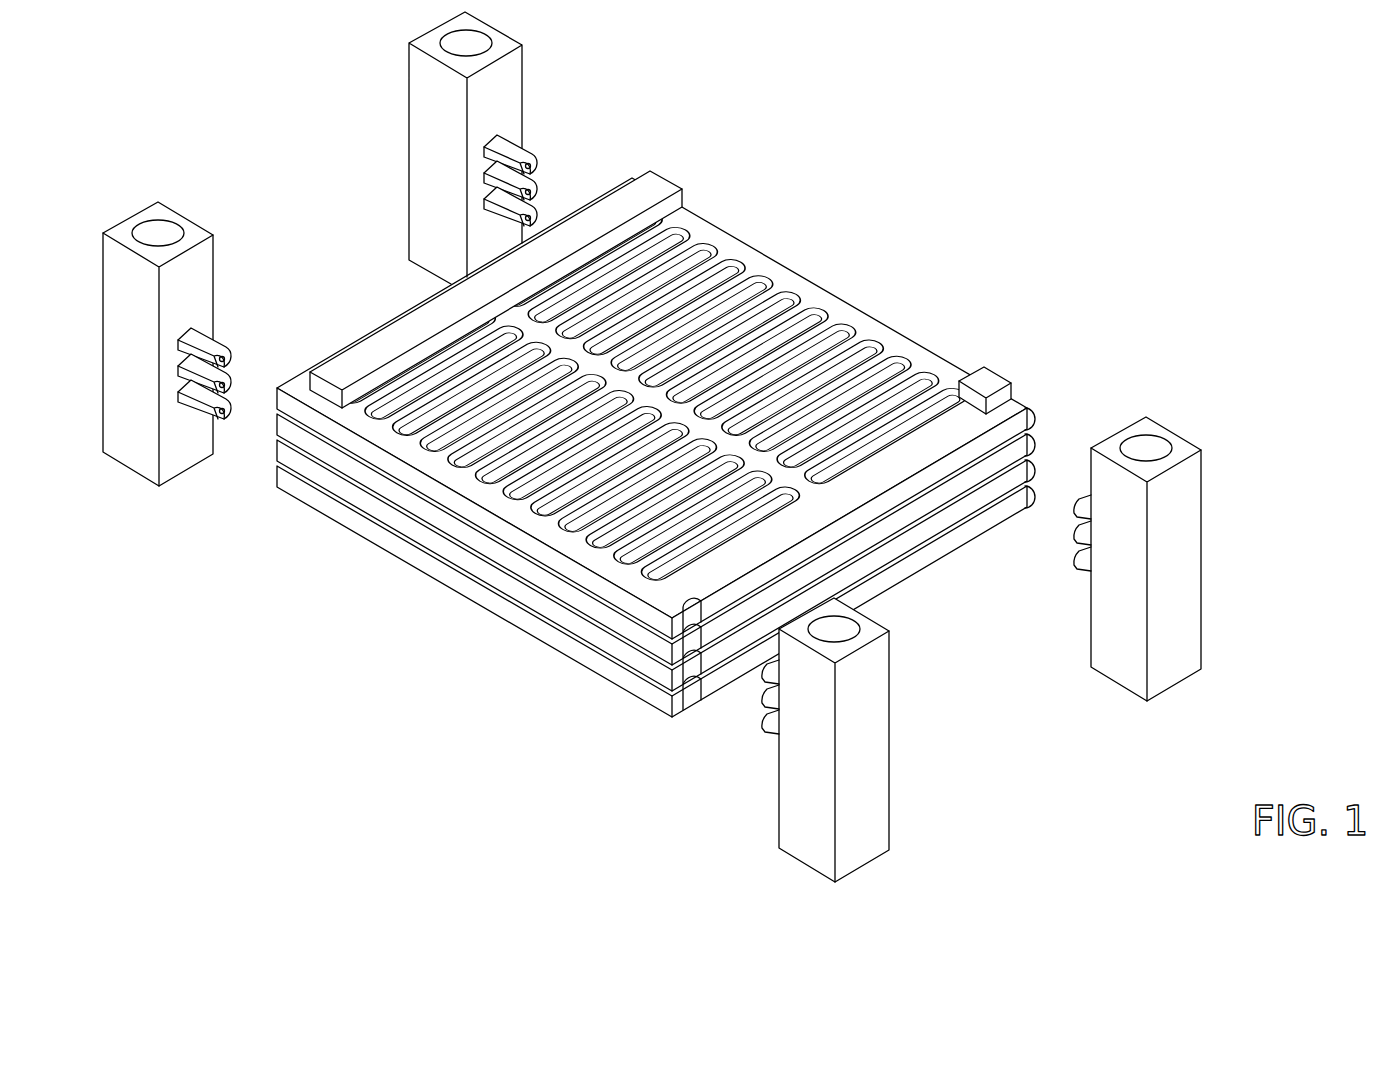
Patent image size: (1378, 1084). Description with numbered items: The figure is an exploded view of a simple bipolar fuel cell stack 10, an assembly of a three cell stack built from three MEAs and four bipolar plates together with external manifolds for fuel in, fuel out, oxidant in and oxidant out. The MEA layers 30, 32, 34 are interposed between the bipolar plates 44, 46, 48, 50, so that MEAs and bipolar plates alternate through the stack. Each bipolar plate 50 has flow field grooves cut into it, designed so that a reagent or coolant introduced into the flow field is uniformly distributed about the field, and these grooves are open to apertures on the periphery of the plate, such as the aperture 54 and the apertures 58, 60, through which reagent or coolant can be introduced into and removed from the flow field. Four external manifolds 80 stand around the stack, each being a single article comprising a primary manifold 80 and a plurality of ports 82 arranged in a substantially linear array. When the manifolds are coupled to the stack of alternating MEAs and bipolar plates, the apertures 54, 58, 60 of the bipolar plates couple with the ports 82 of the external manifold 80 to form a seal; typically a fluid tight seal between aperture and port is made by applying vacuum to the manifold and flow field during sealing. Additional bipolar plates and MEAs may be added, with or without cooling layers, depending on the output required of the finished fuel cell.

The fuel cell stack 10 is at (681, 447).
The MEA layer 30 is at (1032, 430).
The MEA layer 32 is at (1030, 455).
The MEA layer 34 is at (1032, 478).
The bipolar plate 44 is at (1032, 490).
The bipolar plate 46 is at (1034, 464).
The bipolar plate 48 is at (1034, 448).
The bipolar plate 50 is at (1030, 420).
The aperture 54 is at (692, 700).
The aperture 58 is at (310, 372).
The aperture 60 is at (990, 405).
The external manifold 80 is at (522, 68).
The port 82 is at (220, 344).